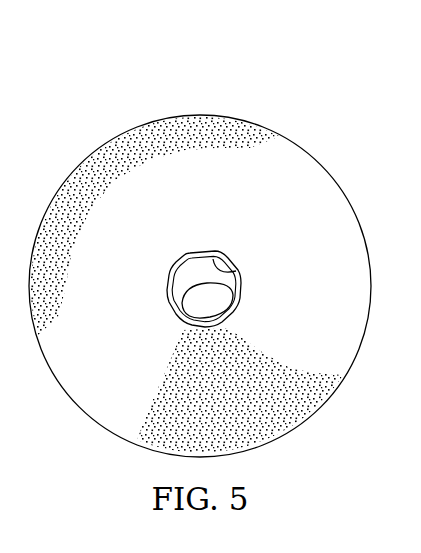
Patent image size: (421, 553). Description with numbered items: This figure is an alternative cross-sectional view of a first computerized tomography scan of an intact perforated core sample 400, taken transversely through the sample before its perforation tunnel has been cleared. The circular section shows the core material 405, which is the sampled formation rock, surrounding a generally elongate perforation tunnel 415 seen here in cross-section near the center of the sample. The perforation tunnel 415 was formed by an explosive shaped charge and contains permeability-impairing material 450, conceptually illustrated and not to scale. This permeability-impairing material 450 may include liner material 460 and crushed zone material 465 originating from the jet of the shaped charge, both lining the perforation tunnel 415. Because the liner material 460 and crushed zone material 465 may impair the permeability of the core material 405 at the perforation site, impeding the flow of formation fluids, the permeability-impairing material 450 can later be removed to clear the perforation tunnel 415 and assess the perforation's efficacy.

The intact perforated core sample 400 is at (107, 69).
The core material 405 is at (233, 127).
The perforation tunnel 415 is at (180, 268).
The permeability-impairing material 450 is at (160, 309).
The liner material 460 is at (233, 285).
The crushed zone material 465 is at (235, 272).